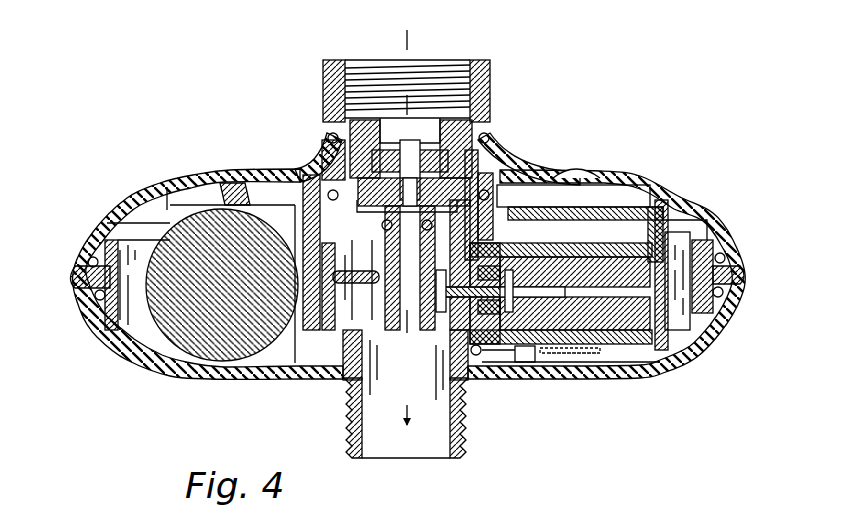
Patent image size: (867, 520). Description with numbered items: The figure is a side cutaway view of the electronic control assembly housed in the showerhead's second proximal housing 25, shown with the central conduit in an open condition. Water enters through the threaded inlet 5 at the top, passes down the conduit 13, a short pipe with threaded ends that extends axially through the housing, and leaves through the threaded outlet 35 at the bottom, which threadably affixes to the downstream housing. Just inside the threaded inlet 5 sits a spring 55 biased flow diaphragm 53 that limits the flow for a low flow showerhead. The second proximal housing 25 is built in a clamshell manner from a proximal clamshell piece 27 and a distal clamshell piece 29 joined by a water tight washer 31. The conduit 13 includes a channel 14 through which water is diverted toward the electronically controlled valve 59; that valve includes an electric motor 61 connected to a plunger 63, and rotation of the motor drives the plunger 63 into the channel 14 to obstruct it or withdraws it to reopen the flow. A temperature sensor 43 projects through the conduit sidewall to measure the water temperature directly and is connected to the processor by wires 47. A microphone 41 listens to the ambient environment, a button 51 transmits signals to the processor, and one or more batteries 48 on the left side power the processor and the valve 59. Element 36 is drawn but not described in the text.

The threaded inlet 5 is at (333, 60).
The conduit 13 is at (440, 73).
The channel 14 is at (434, 275).
The second proximal housing 25 is at (203, 150).
The proximal clamshell piece 27 is at (713, 210).
The distal clamshell piece 29 is at (705, 350).
The water tight washer 31 is at (72, 276).
The threaded outlet 35 is at (352, 460).
The contact plate 36 is at (540, 373).
The microphone 41 is at (522, 357).
The temperature sensor 43 is at (347, 378).
The wires 47 is at (290, 370).
The batteries 48 is at (222, 345).
The button 51 is at (579, 165).
The flow diaphragm 53 is at (340, 133).
The spring 55 is at (340, 170).
The electronically controlled valve 59 is at (585, 335).
The electric motor 61 is at (615, 315).
The plunger 63 is at (492, 258).